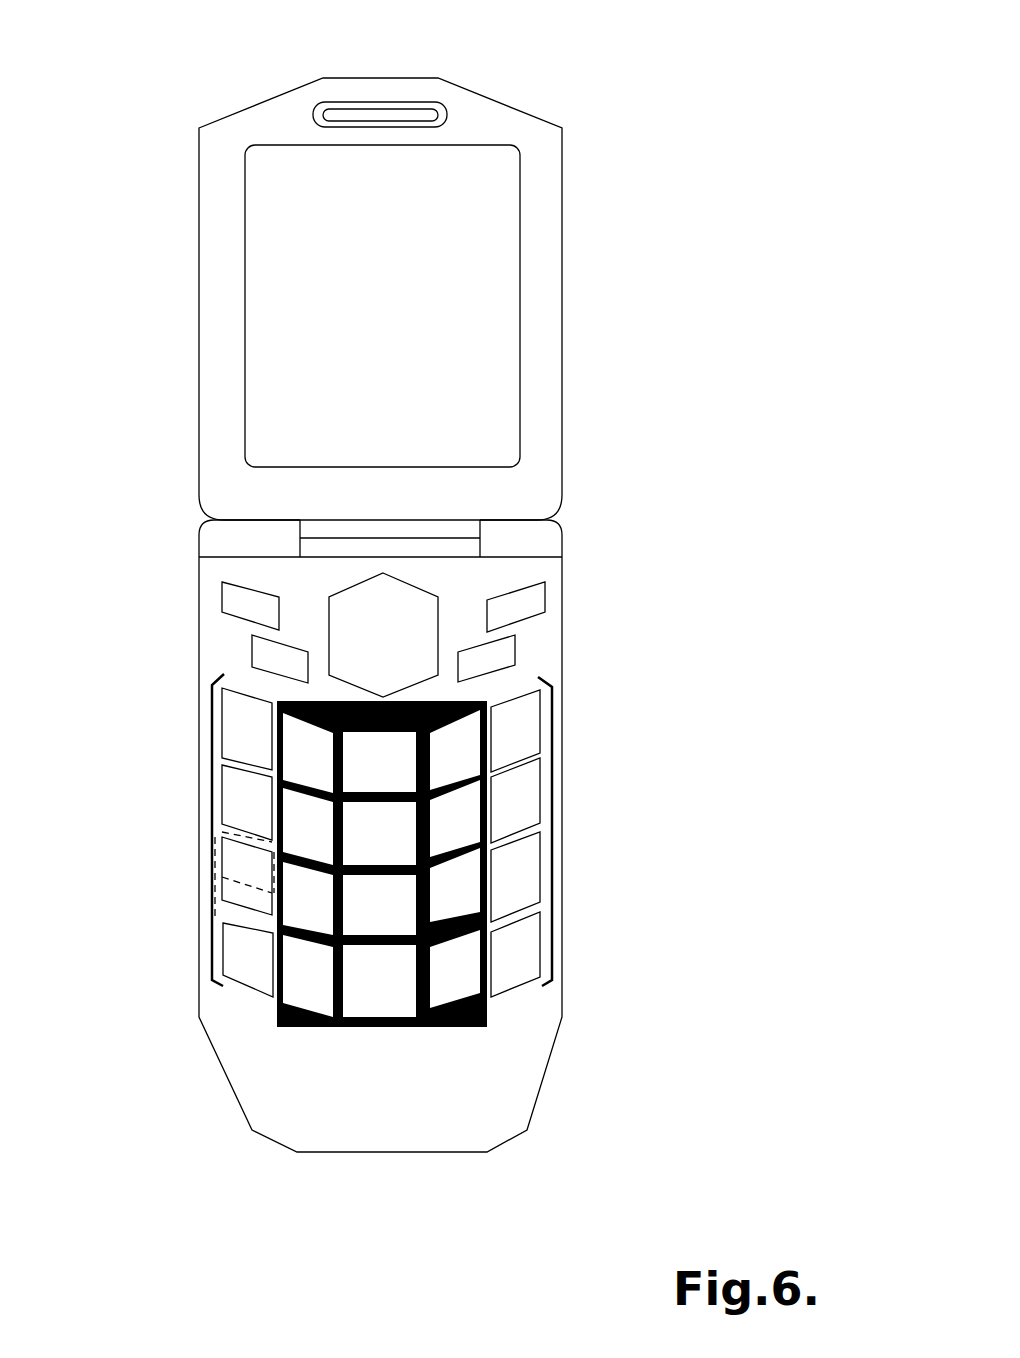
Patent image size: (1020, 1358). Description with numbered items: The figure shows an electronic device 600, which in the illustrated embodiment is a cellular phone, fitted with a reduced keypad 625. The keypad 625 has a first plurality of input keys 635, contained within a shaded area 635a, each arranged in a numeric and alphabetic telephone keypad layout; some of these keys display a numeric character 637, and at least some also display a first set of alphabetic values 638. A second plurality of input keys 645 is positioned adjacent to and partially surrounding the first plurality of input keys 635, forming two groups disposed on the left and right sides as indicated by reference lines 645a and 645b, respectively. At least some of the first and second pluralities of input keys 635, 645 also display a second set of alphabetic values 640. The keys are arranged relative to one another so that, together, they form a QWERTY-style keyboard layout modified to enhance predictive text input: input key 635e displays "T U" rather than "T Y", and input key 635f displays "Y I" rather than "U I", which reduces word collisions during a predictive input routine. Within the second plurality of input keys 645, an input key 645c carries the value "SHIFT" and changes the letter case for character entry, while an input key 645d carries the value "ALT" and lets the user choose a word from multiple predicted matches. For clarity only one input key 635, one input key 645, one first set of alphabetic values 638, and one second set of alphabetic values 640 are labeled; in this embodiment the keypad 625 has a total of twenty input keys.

The electronic device 600 is at (398, 580).
The reduced keypad 625 is at (540, 663).
The first plurality of input keys 635 is at (398, 780).
The shaded area 635a is at (488, 1028).
The input key 635e is at (574, 622).
The input key 635f is at (475, 753).
The numeric character 637 is at (302, 775).
The first set of alphabetic values 638 is at (333, 702).
The second set of alphabetic values 640 is at (245, 868).
The second plurality of input keys 645 is at (383, 903).
The reference line 645a is at (212, 833).
The reference line 645b is at (543, 827).
The input key 645c is at (257, 975).
The input key 645d is at (525, 950).